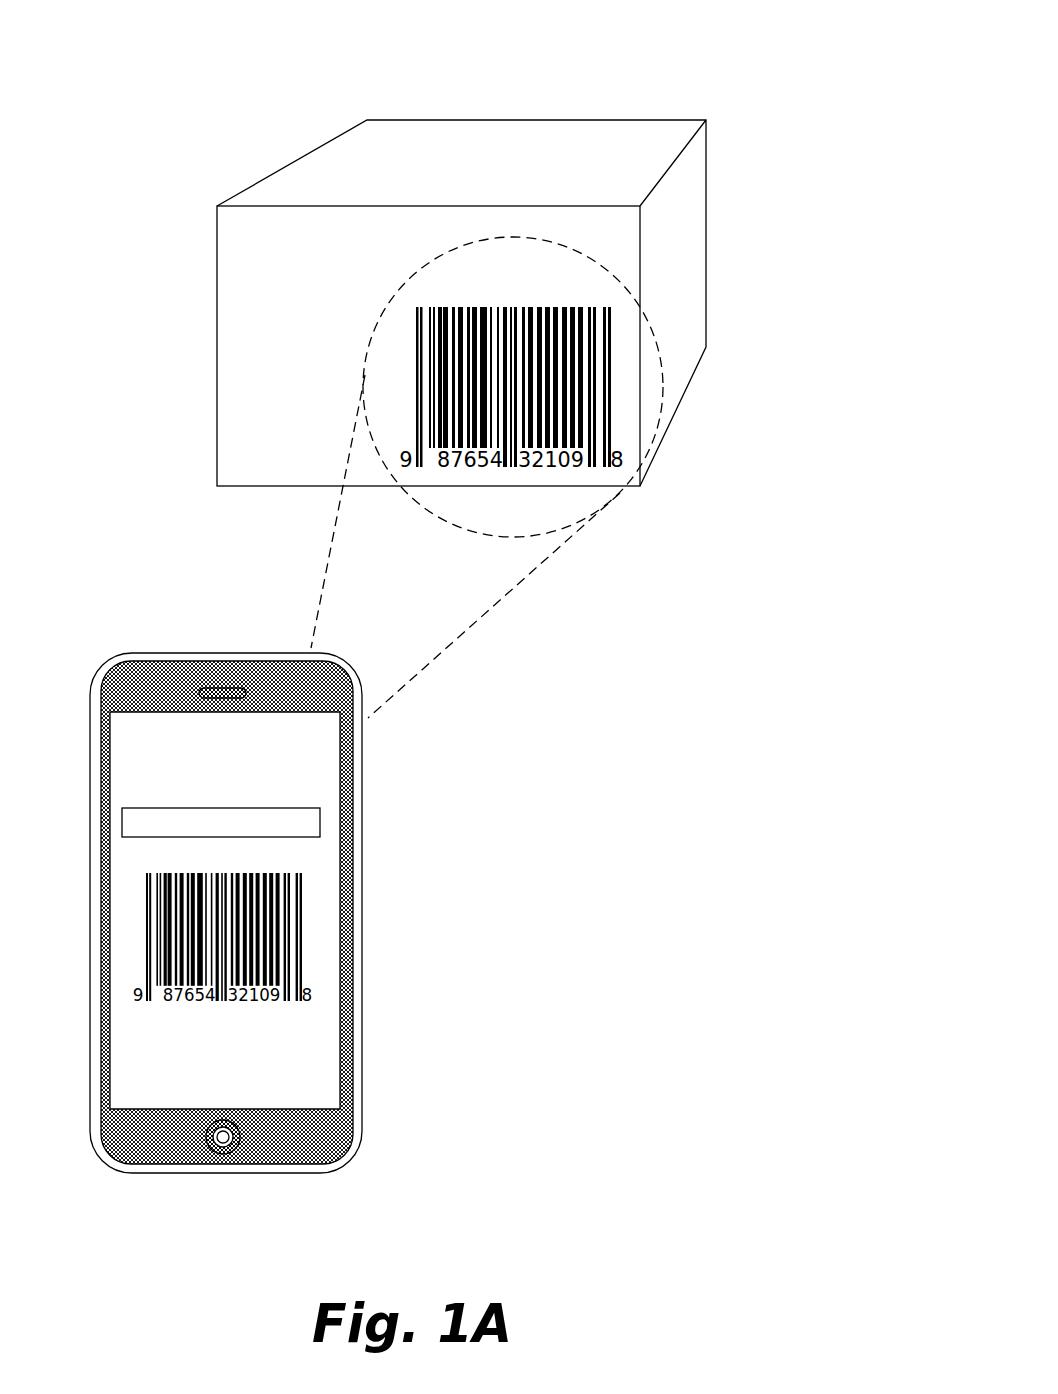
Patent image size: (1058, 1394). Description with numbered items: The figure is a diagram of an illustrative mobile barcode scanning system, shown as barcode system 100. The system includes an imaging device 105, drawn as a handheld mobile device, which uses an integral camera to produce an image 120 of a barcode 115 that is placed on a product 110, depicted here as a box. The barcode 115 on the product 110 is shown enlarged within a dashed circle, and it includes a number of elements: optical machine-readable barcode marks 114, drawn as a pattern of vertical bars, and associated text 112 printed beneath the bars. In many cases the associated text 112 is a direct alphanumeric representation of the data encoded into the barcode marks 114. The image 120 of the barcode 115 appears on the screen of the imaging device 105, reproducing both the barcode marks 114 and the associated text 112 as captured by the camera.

The barcode system 100 is at (743, 112).
The imaging device 105 is at (358, 788).
The product 110 is at (692, 316).
The associated text 112 is at (588, 462).
The barcode marks 114 is at (610, 377).
The barcode 115 is at (397, 313).
The image 120 is at (300, 943).